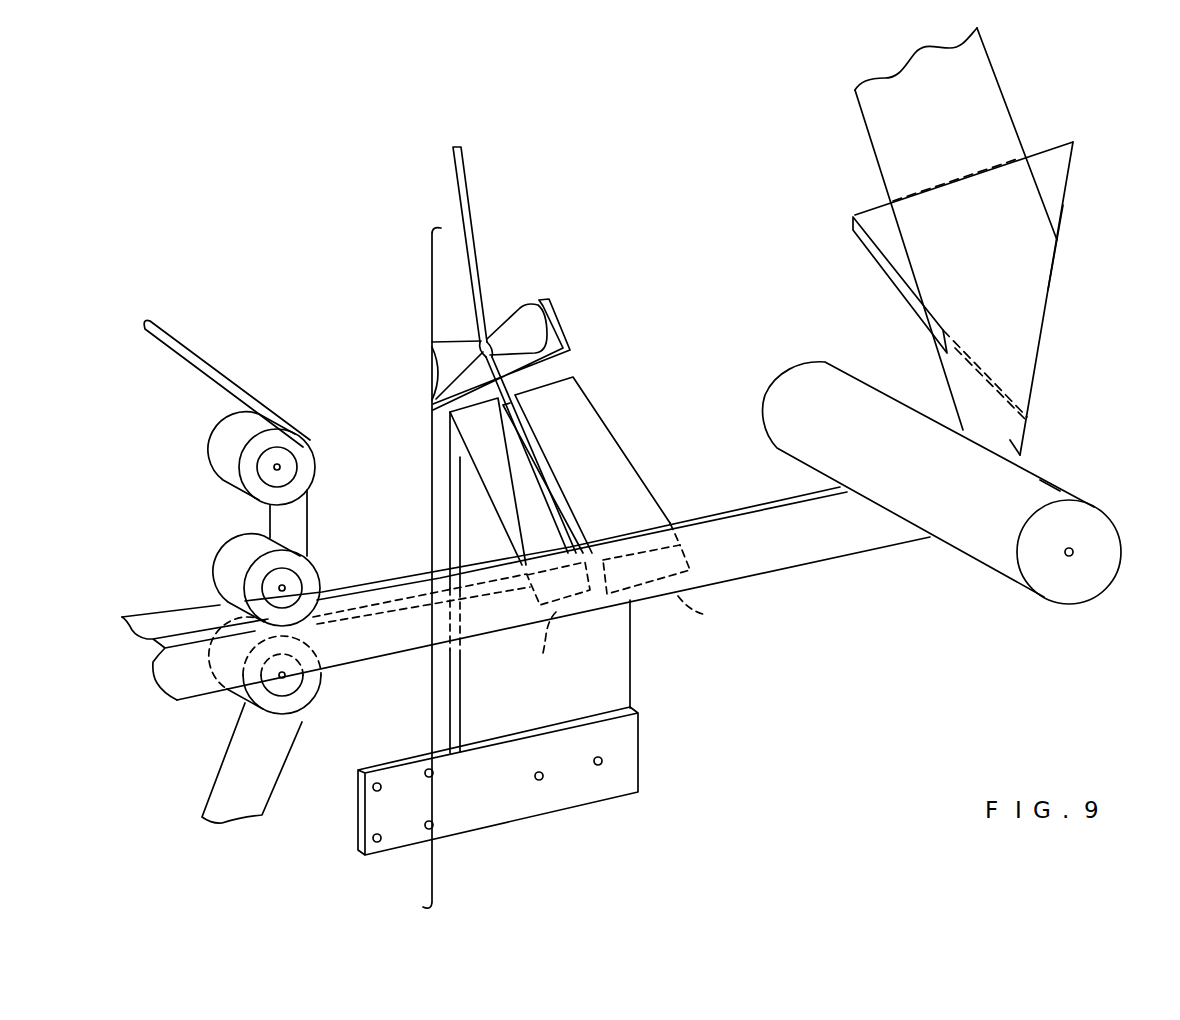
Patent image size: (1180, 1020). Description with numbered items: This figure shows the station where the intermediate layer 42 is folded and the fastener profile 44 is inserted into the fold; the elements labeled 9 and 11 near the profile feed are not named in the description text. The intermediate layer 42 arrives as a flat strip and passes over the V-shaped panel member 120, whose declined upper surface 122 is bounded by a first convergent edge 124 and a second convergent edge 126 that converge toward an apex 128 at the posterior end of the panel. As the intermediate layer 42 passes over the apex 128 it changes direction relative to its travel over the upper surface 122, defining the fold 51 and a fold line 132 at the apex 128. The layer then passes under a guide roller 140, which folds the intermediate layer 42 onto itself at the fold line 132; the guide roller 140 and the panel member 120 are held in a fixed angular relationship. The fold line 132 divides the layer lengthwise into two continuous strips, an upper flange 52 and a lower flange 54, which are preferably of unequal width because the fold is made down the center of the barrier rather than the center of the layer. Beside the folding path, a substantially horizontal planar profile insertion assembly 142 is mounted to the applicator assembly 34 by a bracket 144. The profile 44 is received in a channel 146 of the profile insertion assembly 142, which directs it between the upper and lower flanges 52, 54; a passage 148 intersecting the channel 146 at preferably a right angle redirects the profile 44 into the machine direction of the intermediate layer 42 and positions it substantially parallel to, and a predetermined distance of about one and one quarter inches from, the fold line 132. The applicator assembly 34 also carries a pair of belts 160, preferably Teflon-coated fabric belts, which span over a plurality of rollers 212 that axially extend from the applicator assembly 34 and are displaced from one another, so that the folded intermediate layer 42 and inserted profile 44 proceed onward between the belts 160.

The cone guide 9 is at (514, 303).
The bracket 11 is at (508, 309).
The applicator assembly 34 is at (270, 291).
The intermediate layer 42 is at (997, 97).
The profile 44 is at (472, 219).
The fold 51 is at (847, 537).
The upper flange 52 is at (730, 513).
The lower flange 54 is at (697, 513).
The V-shaped panel member 120 is at (1063, 140).
The upper surface 122 is at (1057, 177).
The first convergent edge 124 is at (1063, 207).
The second convergent edge 126 is at (885, 262).
The apex 128 is at (1030, 417).
The fold line 132 is at (1020, 453).
The guide roller 140 is at (1045, 490).
The profile insertion assembly 142 is at (598, 458).
The bracket 144 is at (631, 679).
The channel 146 is at (692, 607).
The passage 148 is at (621, 649).
The belts 160 is at (237, 382).
The rollers 212 is at (312, 450).